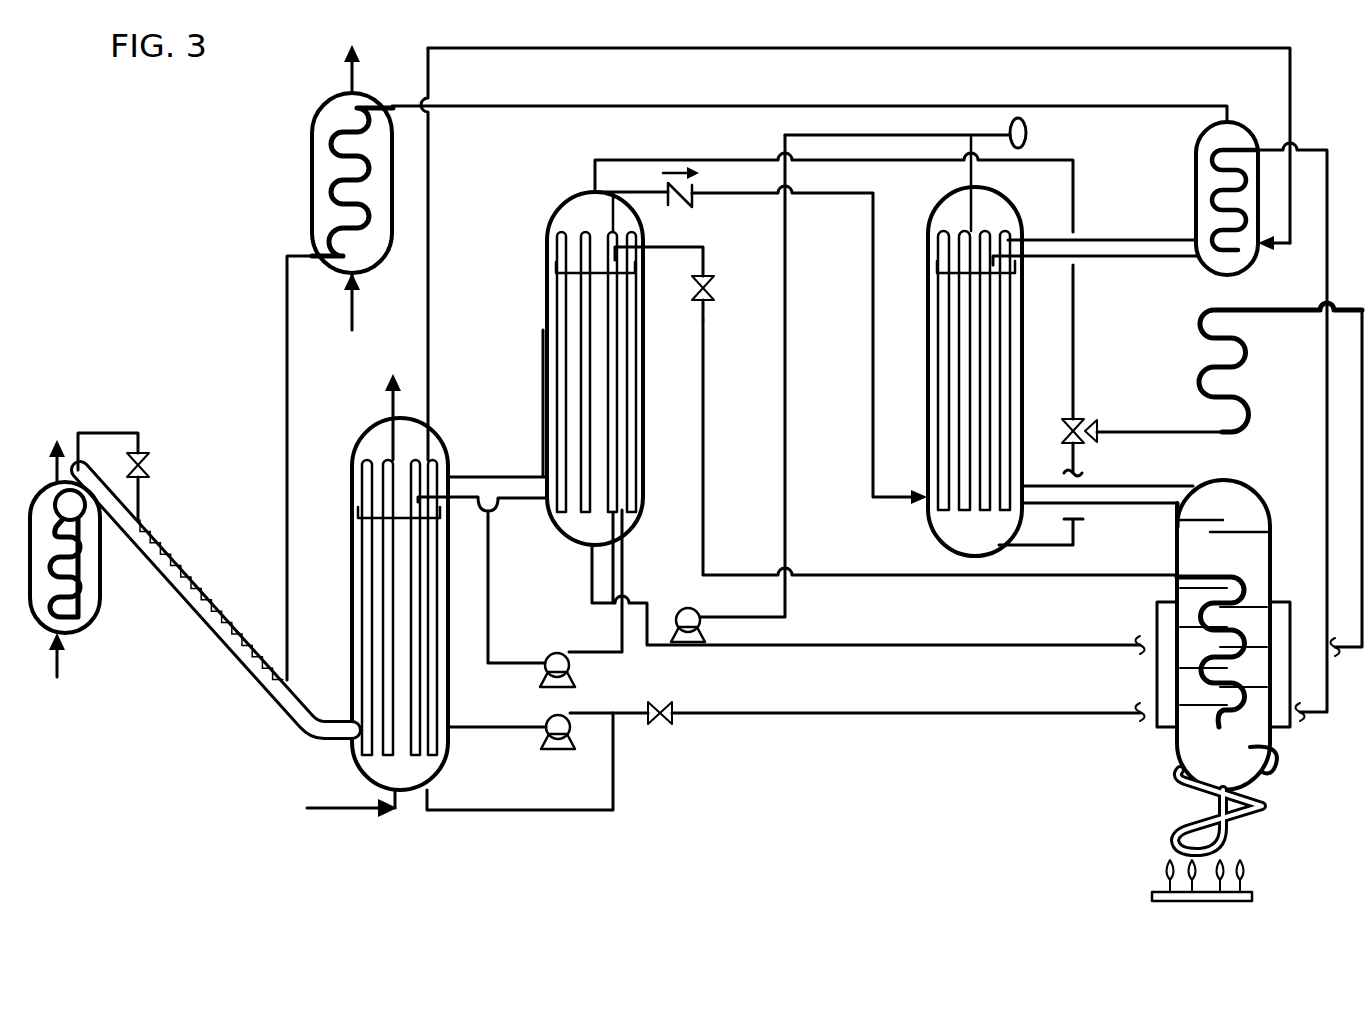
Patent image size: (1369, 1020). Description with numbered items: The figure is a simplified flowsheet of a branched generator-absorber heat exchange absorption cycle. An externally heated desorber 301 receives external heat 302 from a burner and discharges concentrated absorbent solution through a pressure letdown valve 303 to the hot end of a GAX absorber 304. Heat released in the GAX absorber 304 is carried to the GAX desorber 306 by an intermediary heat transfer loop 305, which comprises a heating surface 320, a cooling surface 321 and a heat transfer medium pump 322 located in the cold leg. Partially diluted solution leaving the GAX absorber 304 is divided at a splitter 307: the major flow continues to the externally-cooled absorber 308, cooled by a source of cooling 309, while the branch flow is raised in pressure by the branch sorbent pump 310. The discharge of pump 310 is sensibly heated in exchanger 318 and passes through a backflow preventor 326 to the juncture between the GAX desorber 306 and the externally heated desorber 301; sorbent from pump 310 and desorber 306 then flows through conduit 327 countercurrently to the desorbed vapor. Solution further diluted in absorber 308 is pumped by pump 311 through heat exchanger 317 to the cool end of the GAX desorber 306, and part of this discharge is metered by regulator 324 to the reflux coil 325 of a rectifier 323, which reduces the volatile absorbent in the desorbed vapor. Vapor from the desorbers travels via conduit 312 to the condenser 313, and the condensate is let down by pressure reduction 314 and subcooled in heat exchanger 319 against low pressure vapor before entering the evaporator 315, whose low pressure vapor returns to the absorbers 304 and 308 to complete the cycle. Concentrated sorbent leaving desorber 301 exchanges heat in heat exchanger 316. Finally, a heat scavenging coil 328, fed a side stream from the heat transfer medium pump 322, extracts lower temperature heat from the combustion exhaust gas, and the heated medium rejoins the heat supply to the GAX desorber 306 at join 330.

The externally heated desorber 301 is at (1176, 758).
The external heat 302 is at (1241, 870).
The pressure letdown valve 303 is at (706, 284).
The GAX absorber 304 is at (547, 330).
The intermediary heat transfer loop 305 is at (785, 425).
The GAX desorber 306 is at (927, 353).
The splitter 307 is at (488, 532).
The externally-cooled absorber 308 is at (352, 550).
The source of cooling 309 is at (320, 810).
The branch sorbent pump 310 is at (555, 654).
The pump 311 is at (557, 718).
The conduit 312 is at (1100, 106).
The condenser 313 is at (312, 130).
The pressure reduction 314 is at (150, 462).
The evaporator 315 is at (100, 600).
The heat exchanger 316 is at (1178, 554).
The heat exchanger 317 is at (442, 748).
The heat exchanger 318 is at (633, 497).
The heat exchanger 319 is at (169, 552).
The heating surface 320 is at (934, 536).
The cooling surface 321 is at (568, 202).
The heat transfer medium pump 322 is at (694, 610).
The rectifier 323 is at (1196, 168).
The regulator 324 is at (668, 710).
The reflux coil 325 is at (1210, 210).
The backflow preventor 326 is at (690, 200).
The conduit 327 is at (1132, 487).
The heat scavenging coil 328 is at (1247, 348).
The join 330 is at (1079, 420).